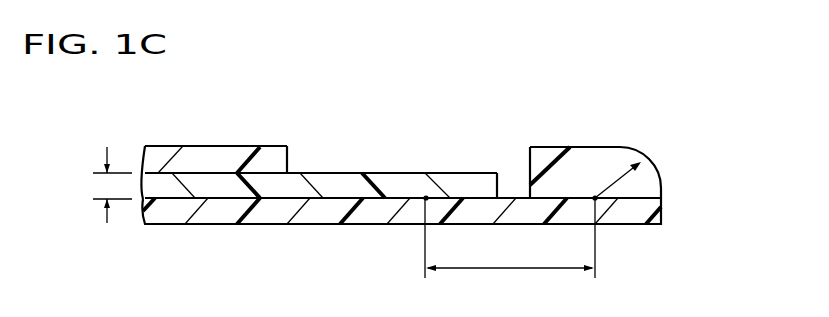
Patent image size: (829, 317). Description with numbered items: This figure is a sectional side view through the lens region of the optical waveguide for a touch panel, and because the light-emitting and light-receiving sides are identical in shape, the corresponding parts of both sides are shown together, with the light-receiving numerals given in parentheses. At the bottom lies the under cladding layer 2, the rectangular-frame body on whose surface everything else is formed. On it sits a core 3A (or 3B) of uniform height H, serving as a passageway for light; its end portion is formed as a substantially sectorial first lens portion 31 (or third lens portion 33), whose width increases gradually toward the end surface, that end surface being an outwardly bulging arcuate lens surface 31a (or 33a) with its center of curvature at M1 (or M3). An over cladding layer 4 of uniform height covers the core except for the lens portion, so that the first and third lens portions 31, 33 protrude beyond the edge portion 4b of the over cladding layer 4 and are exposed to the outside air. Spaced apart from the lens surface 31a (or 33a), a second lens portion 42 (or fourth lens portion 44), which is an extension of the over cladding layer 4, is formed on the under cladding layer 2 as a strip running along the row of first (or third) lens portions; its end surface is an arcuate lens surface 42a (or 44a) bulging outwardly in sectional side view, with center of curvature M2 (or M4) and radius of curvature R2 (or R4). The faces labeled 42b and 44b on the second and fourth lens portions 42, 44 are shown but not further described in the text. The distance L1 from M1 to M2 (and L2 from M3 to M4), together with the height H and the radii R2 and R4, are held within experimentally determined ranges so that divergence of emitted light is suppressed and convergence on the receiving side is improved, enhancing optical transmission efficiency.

The under cladding layer 2 is at (208, 217).
The light-emitting core 3A is at (218, 185).
The light-receiving core 3B is at (214, 134).
The over cladding layer 4 is at (182, 158).
The edge portion of the over cladding layer 4b is at (288, 162).
The first lens portion 31 is at (347, 176).
The third lens portion 33 is at (395, 133).
The lens surface of the first lens portion 31a is at (504, 172).
The lens surface of the third lens portion 33a is at (464, 133).
The center of curvature of the lens surface of the first lens portion M1 is at (426, 198).
The center of curvature of the lens surface of the third lens portion M3 is at (394, 135).
The center of curvature of the lens surface of the second lens portion M2 is at (595, 198).
The center of curvature of the lens surface of the fourth lens portion M4 is at (584, 135).
The second lens portion 42 is at (620, 158).
The fourth lens portion 44 is at (614, 133).
The lens surface of the second lens portion 42a is at (656, 175).
The lens surface of the fourth lens portion 44a is at (679, 128).
The end face of first rounded layer 42b is at (529, 161).
The end face of second rounded layer 44b is at (518, 133).
The height of the cores H is at (102, 185).
The distance between centers of curvature of the first and second lens surfaces L1 is at (510, 239).
The distance between centers of curvature of the third and fourth lens surfaces L2 is at (510, 239).
The radius of curvature of the lens surface of the second lens portion R2 is at (624, 178).
The radius of curvature of the lens surface of the fourth lens portion R4 is at (671, 216).